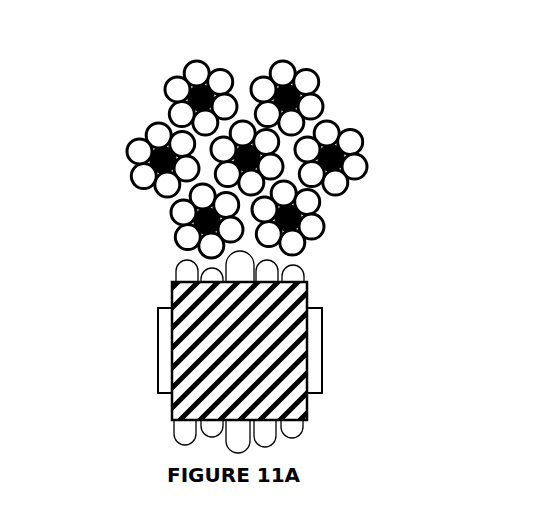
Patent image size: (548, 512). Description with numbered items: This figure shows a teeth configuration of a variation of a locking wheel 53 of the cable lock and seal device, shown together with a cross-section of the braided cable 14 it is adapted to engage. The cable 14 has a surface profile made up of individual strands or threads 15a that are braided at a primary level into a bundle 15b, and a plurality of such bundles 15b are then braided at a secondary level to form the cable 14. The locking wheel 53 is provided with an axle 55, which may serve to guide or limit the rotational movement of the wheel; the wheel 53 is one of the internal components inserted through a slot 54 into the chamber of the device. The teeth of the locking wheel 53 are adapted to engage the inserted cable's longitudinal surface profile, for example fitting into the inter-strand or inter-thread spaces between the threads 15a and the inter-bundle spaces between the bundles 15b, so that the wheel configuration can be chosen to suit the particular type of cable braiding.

The cable 14 is at (147, 100).
The individual strands or threads 15a is at (298, 66).
The bundle 15b is at (423, 13).
The locking wheel 53 is at (307, 295).
The slot 54 is at (172, 268).
The axle 55 is at (322, 358).